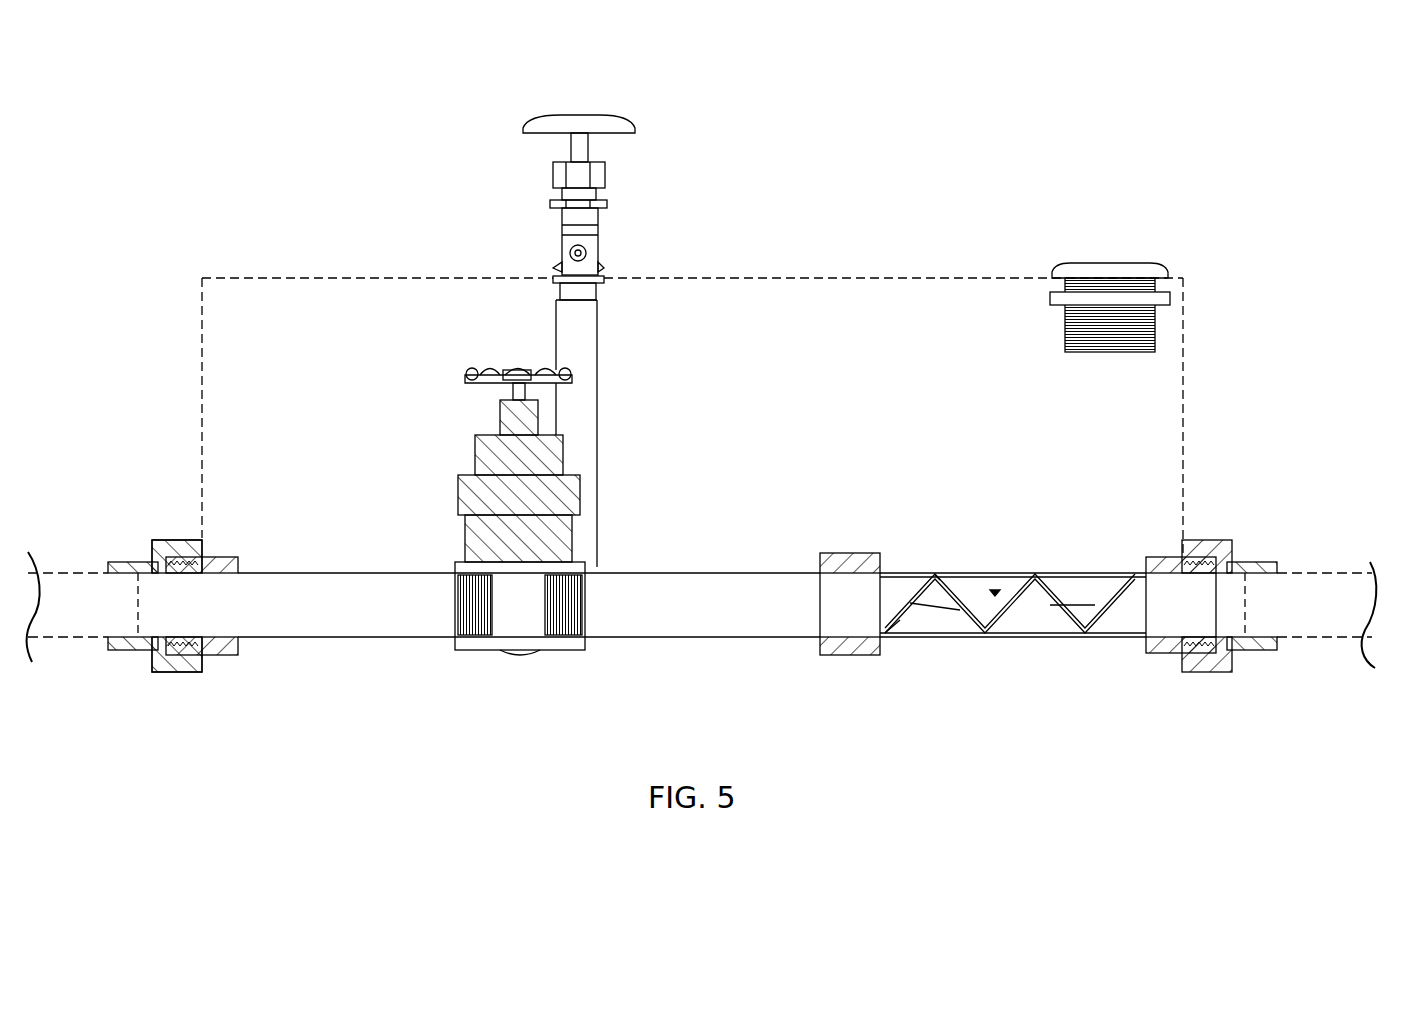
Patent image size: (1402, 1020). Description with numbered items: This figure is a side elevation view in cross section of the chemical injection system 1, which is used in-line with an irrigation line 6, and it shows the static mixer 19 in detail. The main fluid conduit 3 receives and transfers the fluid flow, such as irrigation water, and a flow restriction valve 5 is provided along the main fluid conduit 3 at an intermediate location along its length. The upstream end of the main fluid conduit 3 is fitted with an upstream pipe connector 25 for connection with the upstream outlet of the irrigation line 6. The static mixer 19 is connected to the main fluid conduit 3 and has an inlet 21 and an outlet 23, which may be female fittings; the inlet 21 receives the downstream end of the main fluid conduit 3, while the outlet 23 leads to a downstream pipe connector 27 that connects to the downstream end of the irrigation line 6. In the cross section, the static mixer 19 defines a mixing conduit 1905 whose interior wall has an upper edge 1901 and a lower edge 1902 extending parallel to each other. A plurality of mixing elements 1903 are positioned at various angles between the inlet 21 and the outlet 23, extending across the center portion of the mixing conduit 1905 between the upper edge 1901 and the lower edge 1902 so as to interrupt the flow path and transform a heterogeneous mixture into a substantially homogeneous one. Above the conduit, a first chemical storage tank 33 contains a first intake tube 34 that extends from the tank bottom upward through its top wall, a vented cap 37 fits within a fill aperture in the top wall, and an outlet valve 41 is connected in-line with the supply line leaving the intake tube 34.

The chemical injection system 1 is at (222, 158).
The main fluid conduit 3 is at (680, 637).
The flow restriction valve 5 is at (488, 370).
The irrigation line 6 is at (66, 573).
The static mixer 19 is at (1020, 640).
The inlet 21 is at (853, 555).
The outlet 23 is at (1163, 555).
The upstream pipe connector 25 is at (180, 672).
The downstream pipe connector 27 is at (1205, 555).
The first chemical storage tank 33 is at (843, 278).
The first intake tube 34 is at (598, 352).
The vented cap 37 is at (1168, 266).
The outlet valve 41 is at (630, 118).
The upper edge 1901 is at (925, 572).
The lower edge 1902 is at (900, 637).
The mixing elements 1903 is at (962, 608).
The mixing conduit 1905 is at (995, 592).